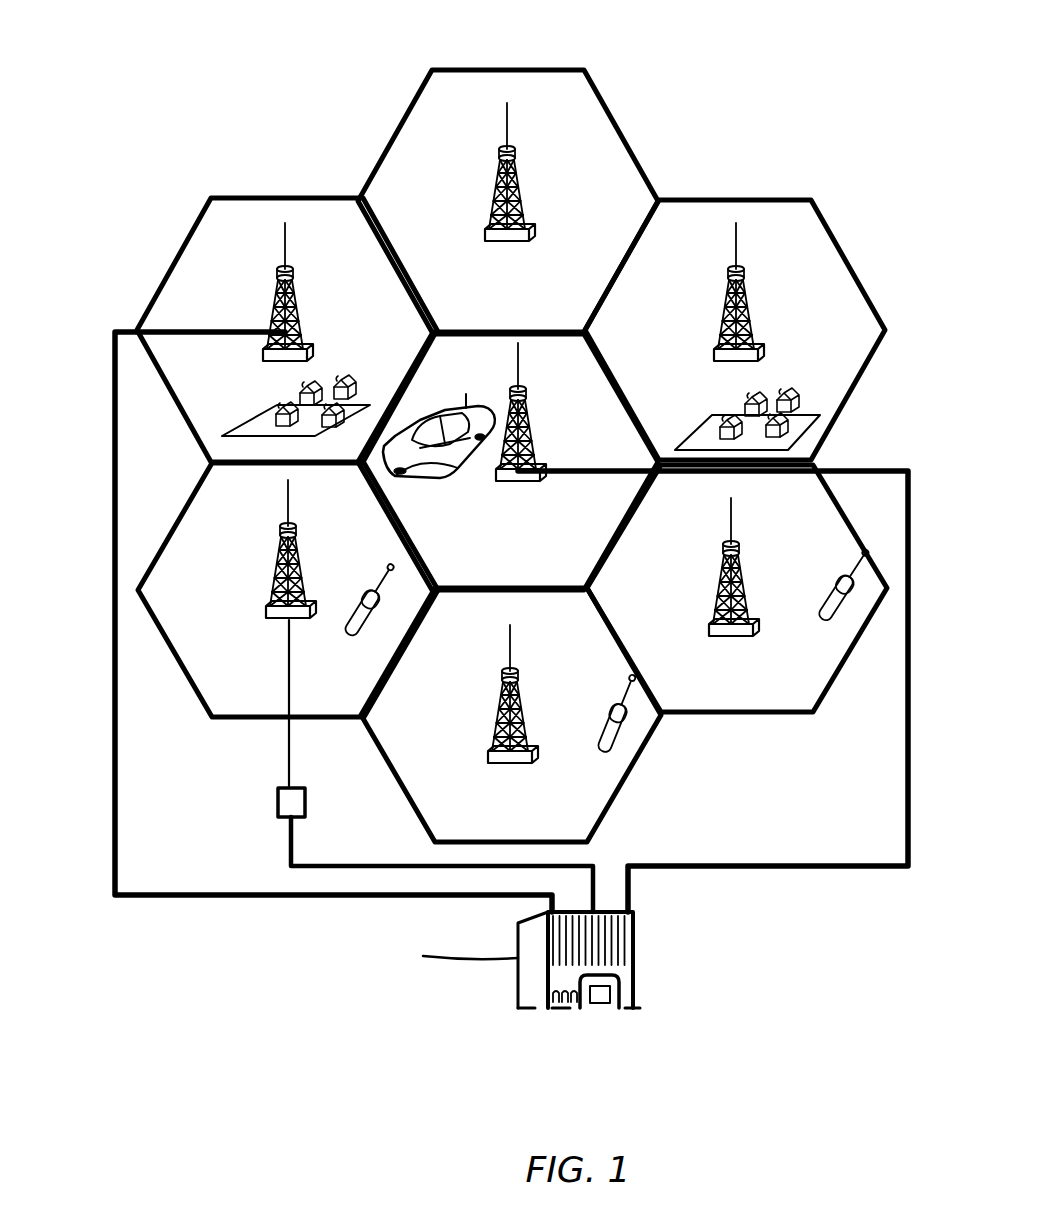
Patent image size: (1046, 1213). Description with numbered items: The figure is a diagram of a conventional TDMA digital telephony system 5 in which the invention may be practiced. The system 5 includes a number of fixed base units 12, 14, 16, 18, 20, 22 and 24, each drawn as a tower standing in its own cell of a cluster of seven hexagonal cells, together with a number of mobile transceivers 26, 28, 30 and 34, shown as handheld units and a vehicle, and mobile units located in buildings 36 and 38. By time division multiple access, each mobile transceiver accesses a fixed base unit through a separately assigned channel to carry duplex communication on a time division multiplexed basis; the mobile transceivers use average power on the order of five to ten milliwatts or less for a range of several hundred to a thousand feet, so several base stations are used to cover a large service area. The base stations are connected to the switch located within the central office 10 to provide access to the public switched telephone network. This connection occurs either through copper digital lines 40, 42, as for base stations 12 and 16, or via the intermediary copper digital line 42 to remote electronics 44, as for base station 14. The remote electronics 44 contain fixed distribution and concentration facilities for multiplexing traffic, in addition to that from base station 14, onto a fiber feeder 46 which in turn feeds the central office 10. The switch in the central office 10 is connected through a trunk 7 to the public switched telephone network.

The TDMA digital telephony system 5 is at (676, 122).
The trunk 7 is at (460, 955).
The central office 10 is at (633, 965).
The fixed base unit 12 is at (298, 288).
The fixed base unit 14 is at (302, 552).
The fixed base unit 16 is at (537, 412).
The fixed base unit 18 is at (522, 175).
The fixed base unit 20 is at (523, 673).
The fixed base unit 22 is at (752, 284).
The fixed base unit 24 is at (747, 560).
The mobile transceiver 26 is at (377, 610).
The mobile transceiver 28 is at (601, 718).
The mobile transceiver 30 is at (831, 600).
The mobile transceiver 34 is at (444, 418).
The building 36 is at (347, 383).
The building 38 is at (790, 395).
The copper digital line 40 is at (113, 786).
The copper digital line 42 is at (286, 741).
The remote electronics 44 is at (277, 809).
The fiber feeder 46 is at (288, 853).